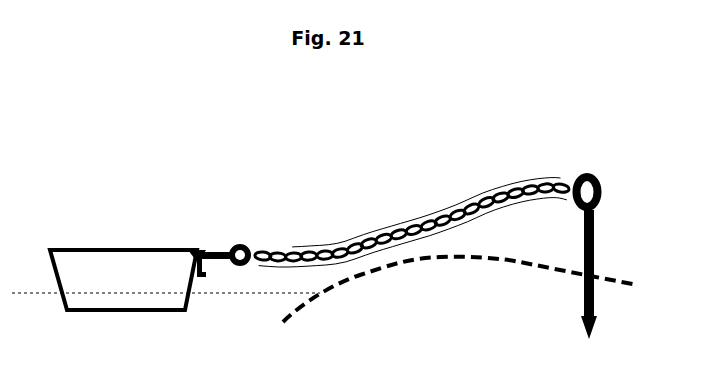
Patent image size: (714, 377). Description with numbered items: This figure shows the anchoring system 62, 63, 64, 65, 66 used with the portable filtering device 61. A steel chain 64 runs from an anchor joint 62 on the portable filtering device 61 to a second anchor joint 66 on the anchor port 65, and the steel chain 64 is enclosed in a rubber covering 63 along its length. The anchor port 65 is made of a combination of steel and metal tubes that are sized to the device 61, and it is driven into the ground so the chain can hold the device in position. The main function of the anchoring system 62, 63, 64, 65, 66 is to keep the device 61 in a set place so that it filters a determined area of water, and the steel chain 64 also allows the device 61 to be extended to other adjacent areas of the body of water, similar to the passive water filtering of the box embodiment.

The device 61 is at (71, 245).
The anchor joint 62 is at (212, 245).
The rubber covering 63 is at (322, 240).
The steel chain 64 is at (507, 185).
The anchor port 65 is at (605, 240).
The second anchor joint 66 is at (605, 195).